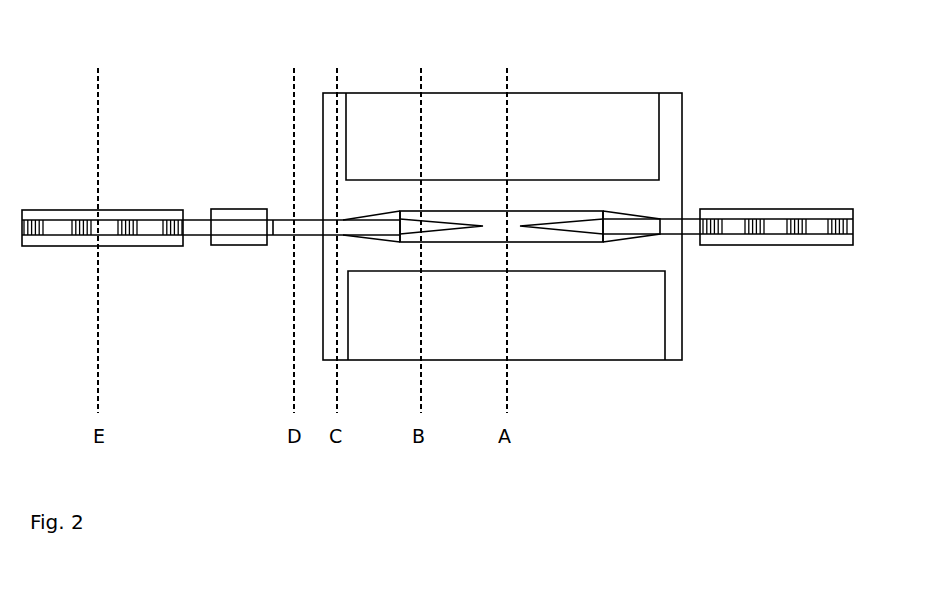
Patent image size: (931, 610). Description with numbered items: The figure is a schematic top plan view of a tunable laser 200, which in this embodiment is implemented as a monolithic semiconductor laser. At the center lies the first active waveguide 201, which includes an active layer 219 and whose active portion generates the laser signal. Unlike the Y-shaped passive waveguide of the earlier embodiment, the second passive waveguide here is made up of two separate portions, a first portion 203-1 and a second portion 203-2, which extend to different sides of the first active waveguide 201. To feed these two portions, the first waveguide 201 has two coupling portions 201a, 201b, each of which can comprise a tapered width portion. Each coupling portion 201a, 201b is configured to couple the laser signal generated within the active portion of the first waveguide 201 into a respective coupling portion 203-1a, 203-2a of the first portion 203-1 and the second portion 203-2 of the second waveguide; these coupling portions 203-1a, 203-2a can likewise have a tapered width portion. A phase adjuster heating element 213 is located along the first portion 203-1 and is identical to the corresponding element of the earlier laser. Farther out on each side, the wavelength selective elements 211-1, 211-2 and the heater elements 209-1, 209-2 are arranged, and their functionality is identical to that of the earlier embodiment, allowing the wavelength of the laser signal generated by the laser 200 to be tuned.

The tunable laser 200 is at (139, 58).
The heater element 209-1 is at (44, 210).
The wavelength selective element 211-1 is at (128, 220).
The phase adjuster heating element 213 is at (233, 209).
The active layer 219 is at (328, 98).
The first active waveguide 201 is at (493, 211).
The coupling portion of first waveguide 201a is at (384, 212).
The coupling portion of first waveguide 201b is at (610, 211).
The first portion of second waveguide 203-1 is at (300, 226).
The coupling portion of first portion of second waveguide 203-1a is at (452, 228).
The second portion of second waveguide 203-2 is at (672, 226).
The coupling portion of second portion of second waveguide 203-2a is at (584, 230).
The heater element 209-2 is at (810, 209).
The wavelength selective element 211-2 is at (751, 219).